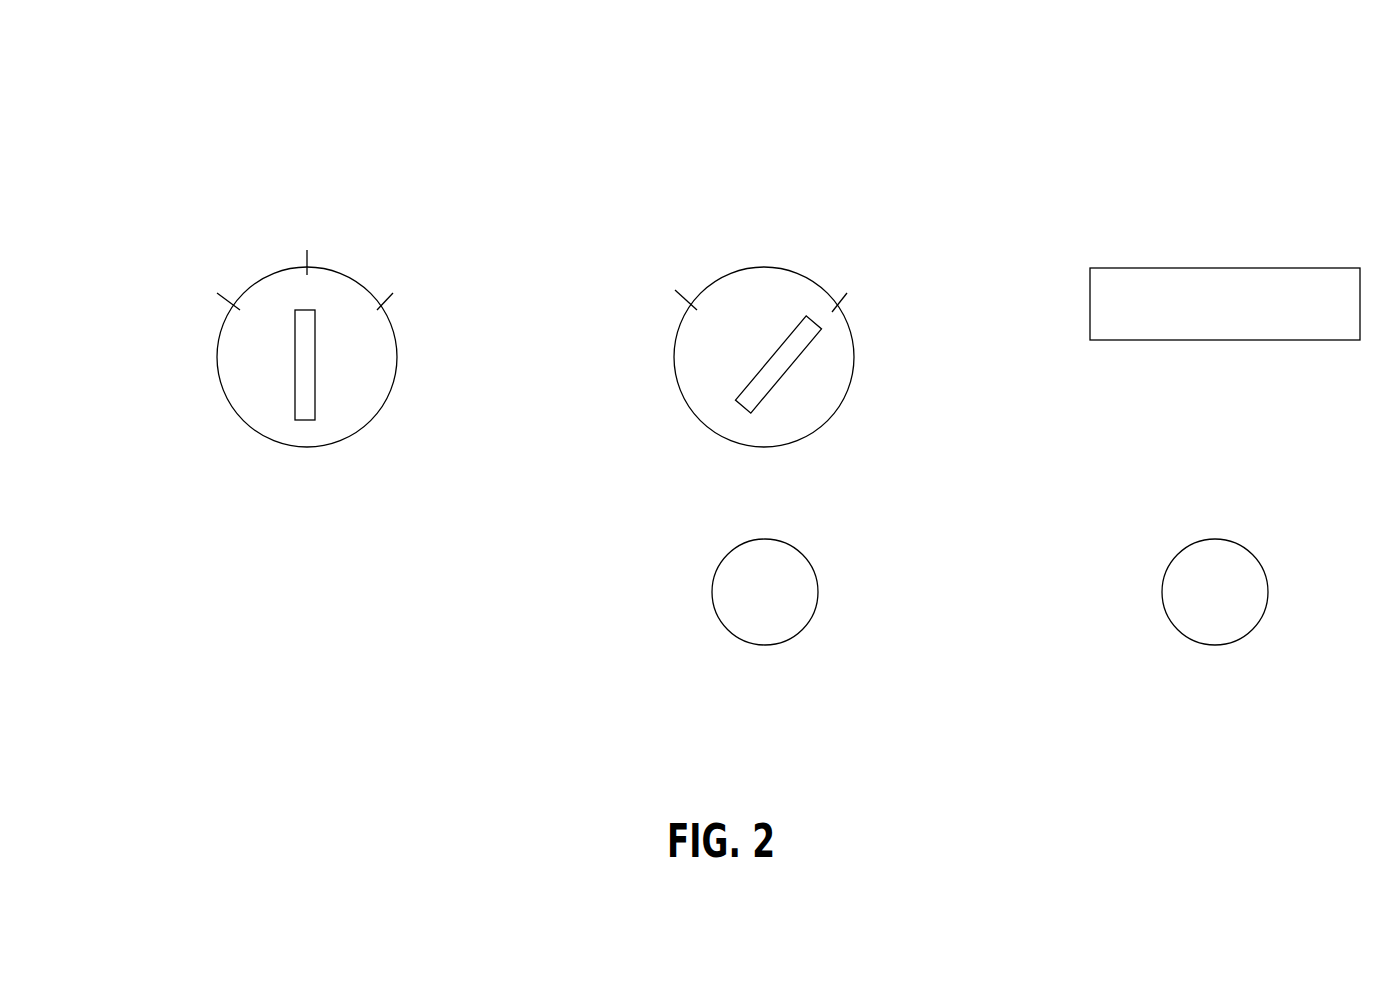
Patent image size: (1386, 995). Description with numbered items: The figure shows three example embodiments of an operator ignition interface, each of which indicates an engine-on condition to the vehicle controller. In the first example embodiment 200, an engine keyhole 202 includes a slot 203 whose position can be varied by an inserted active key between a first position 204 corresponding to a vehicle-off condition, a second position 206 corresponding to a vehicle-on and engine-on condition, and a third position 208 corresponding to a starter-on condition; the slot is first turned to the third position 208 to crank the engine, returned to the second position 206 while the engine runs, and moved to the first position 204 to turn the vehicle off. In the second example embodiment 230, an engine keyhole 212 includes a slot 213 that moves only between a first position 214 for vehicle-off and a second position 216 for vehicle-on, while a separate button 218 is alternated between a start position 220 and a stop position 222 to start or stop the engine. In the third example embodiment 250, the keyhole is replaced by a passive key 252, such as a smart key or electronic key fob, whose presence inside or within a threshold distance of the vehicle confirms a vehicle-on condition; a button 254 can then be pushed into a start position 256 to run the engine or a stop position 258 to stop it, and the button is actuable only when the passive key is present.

The first example embodiment of an operator ignition interface 200 is at (197, 157).
The engine keyhole 202 is at (375, 392).
The slot 203 is at (315, 370).
The first position 204 is at (217, 262).
The second position 206 is at (312, 213).
The third position 208 is at (423, 262).
The second example embodiment of an operator ignition interface 230 is at (676, 159).
The engine keyhole 212 is at (833, 393).
The slot 213 is at (783, 343).
The first position 214 is at (677, 265).
The second position 216 is at (882, 273).
The button 218 is at (803, 628).
The start position 220 is at (760, 557).
The stop position 222 is at (760, 627).
The third example embodiment of an operator ignition interface 250 is at (1127, 159).
The passive key 252 is at (1308, 316).
The button 254 is at (1253, 628).
The start position 256 is at (1210, 557).
The stop position 258 is at (1210, 627).